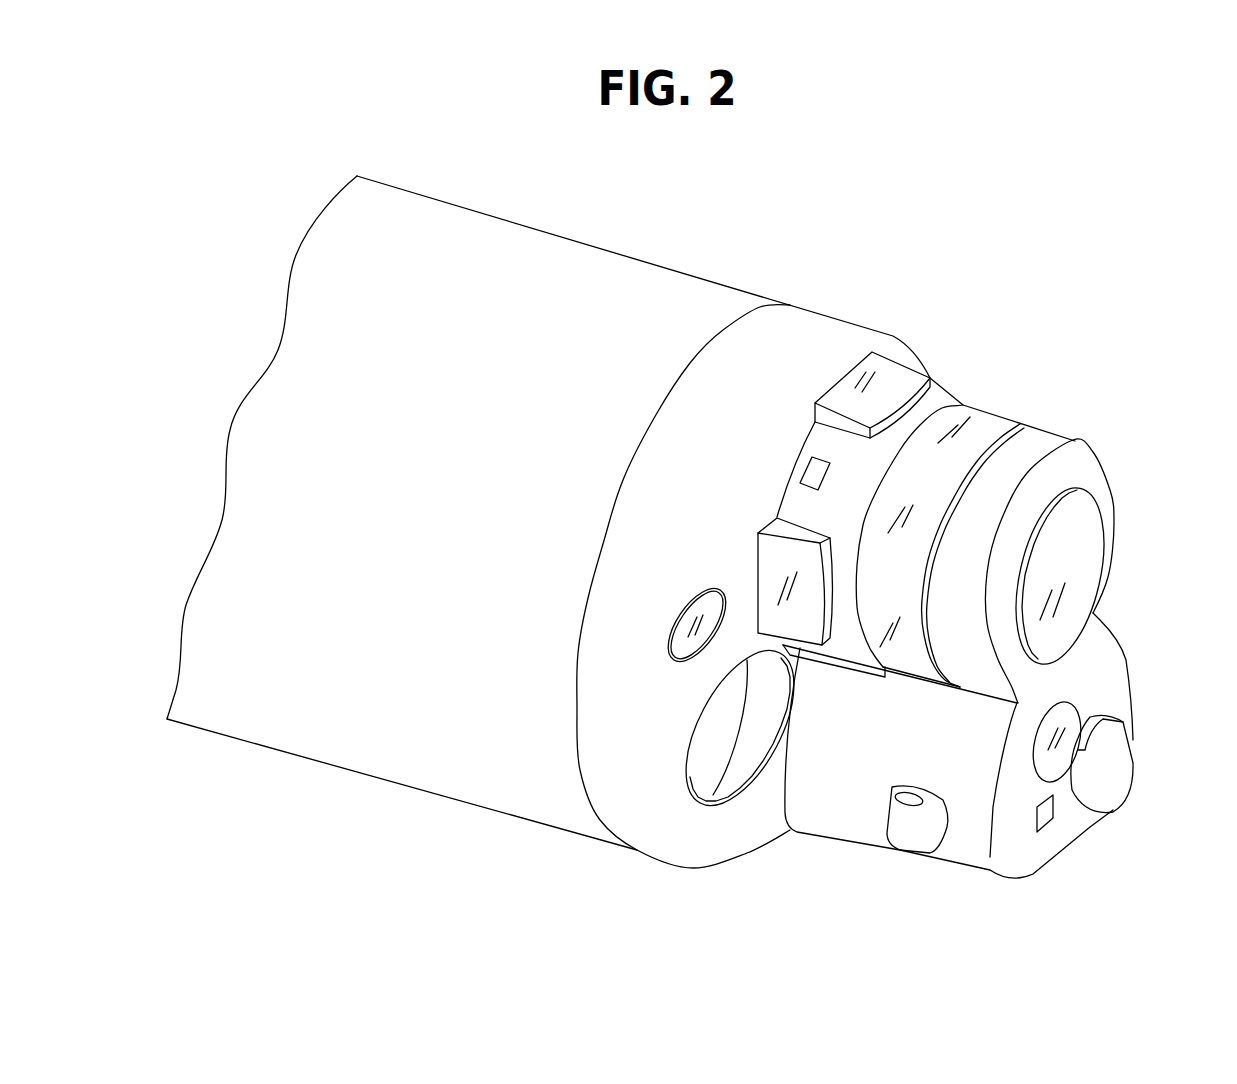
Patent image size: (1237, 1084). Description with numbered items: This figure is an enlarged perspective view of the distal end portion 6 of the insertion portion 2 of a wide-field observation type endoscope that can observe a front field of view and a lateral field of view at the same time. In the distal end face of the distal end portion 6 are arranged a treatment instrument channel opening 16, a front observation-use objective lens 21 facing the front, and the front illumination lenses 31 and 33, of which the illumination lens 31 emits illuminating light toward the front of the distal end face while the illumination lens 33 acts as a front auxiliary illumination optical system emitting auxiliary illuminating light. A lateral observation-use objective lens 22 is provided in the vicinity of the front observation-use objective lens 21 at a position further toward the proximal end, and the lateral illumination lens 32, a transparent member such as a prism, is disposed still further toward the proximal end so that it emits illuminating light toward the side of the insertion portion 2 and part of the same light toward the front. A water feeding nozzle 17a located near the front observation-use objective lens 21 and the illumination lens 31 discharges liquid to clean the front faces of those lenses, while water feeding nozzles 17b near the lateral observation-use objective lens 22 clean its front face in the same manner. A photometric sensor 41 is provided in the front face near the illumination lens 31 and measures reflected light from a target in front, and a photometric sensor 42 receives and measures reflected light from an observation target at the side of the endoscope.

The insertion portion 2 is at (753, 248).
The distal end portion 6 is at (385, 743).
The treatment instrument channel opening 16 is at (705, 763).
The water feeding nozzle 17a is at (1120, 773).
The water feeding nozzle 17b is at (913, 833).
The front observation-use objective lens 21 is at (1090, 558).
The lateral observation-use objective lens 22 is at (985, 425).
The illumination lens 31 is at (1050, 770).
The lateral illumination lens 32 is at (892, 385).
The illumination lens 33 is at (680, 645).
The photometric sensor 41 is at (1043, 820).
The photometric sensor 42 is at (808, 468).